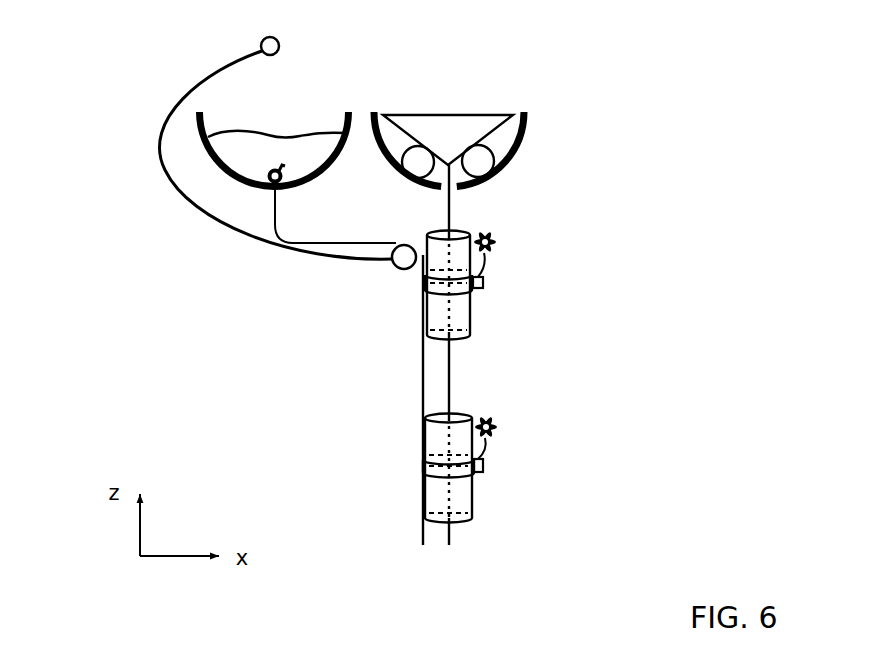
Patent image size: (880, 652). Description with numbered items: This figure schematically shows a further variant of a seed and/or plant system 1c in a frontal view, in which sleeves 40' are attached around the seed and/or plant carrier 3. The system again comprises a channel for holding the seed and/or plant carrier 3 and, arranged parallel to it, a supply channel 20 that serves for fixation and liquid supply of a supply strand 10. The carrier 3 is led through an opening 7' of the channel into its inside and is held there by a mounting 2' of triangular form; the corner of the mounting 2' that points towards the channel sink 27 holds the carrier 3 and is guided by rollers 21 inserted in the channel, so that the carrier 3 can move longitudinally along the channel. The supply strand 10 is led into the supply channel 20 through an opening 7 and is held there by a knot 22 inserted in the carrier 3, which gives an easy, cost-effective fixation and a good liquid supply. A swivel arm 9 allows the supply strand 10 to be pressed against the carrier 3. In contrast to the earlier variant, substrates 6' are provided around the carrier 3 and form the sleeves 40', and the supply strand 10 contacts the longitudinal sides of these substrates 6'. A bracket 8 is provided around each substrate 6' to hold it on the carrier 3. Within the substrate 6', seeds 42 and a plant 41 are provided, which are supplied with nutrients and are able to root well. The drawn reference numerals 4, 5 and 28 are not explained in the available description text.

The seed and/or plant system 1c is at (580, 99).
The mounting 2' is at (525, 130).
The seed and/or plant carrier 3 is at (451, 372).
The tube 4 is at (419, 457).
The liquid reservoir 5 is at (247, 152).
The substrate 6' is at (544, 468).
The opening 7 is at (222, 277).
The opening 7' is at (590, 236).
The bracket 8 is at (484, 284).
The swivel arm 9 is at (383, 262).
The supply strand 10 is at (423, 392).
The supply channel 20 is at (271, 186).
The rollers 21 is at (482, 160).
The knot 22 is at (262, 190).
The channel sink 27 is at (441, 176).
The bowl 28 is at (523, 138).
The sleeves 40' is at (386, 302).
The plant 41 is at (497, 427).
The seeds 42 is at (453, 290).